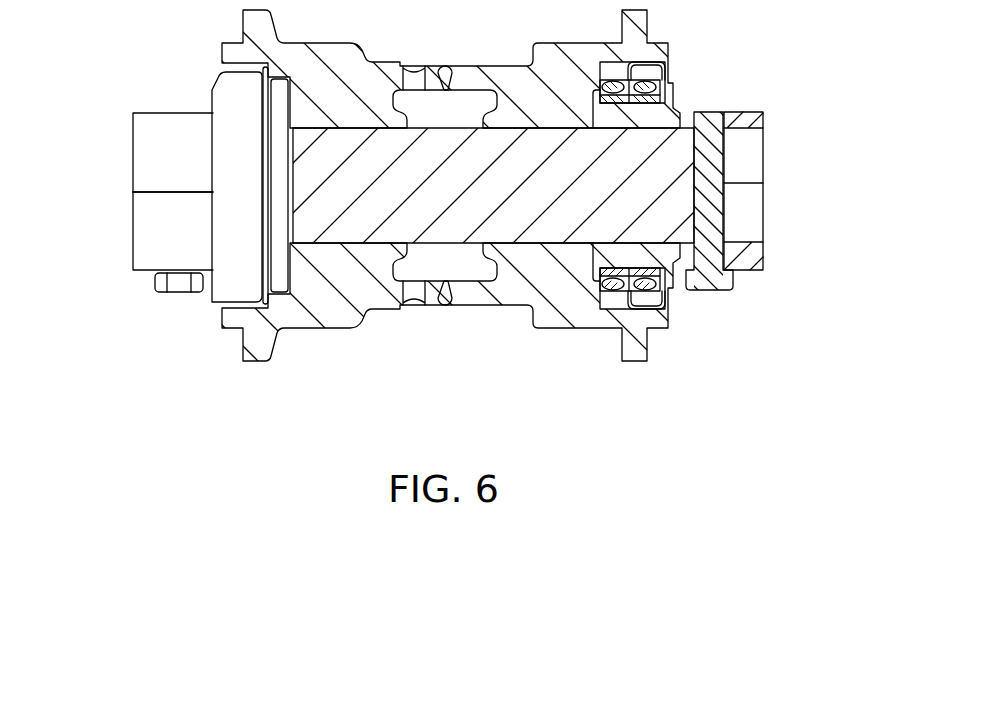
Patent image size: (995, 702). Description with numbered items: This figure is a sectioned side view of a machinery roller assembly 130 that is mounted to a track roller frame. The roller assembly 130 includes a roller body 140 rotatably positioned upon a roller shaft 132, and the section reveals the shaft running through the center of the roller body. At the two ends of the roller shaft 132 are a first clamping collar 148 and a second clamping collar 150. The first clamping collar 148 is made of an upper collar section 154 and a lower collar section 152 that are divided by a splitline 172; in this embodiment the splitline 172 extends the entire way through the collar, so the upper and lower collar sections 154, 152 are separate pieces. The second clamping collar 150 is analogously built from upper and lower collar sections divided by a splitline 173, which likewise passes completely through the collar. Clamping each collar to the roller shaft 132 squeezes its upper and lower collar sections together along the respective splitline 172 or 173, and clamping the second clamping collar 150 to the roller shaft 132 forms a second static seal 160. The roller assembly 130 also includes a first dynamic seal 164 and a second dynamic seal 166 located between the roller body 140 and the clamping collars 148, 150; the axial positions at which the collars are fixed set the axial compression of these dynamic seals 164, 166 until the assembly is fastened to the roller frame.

The roller assembly 130 is at (472, 211).
The roller shaft 132 is at (454, 222).
The roller body 140 is at (636, 363).
The first clamping collar 148 is at (121, 287).
The second clamping collar 150 is at (762, 279).
The lower collar section 152 is at (130, 252).
The upper collar section 154 is at (130, 128).
The second static seal 160 is at (663, 126).
The first dynamic seal 164 is at (275, 76).
The second dynamic seal 166 is at (613, 76).
The splitline 172 is at (130, 190).
The splitline 173 is at (764, 160).